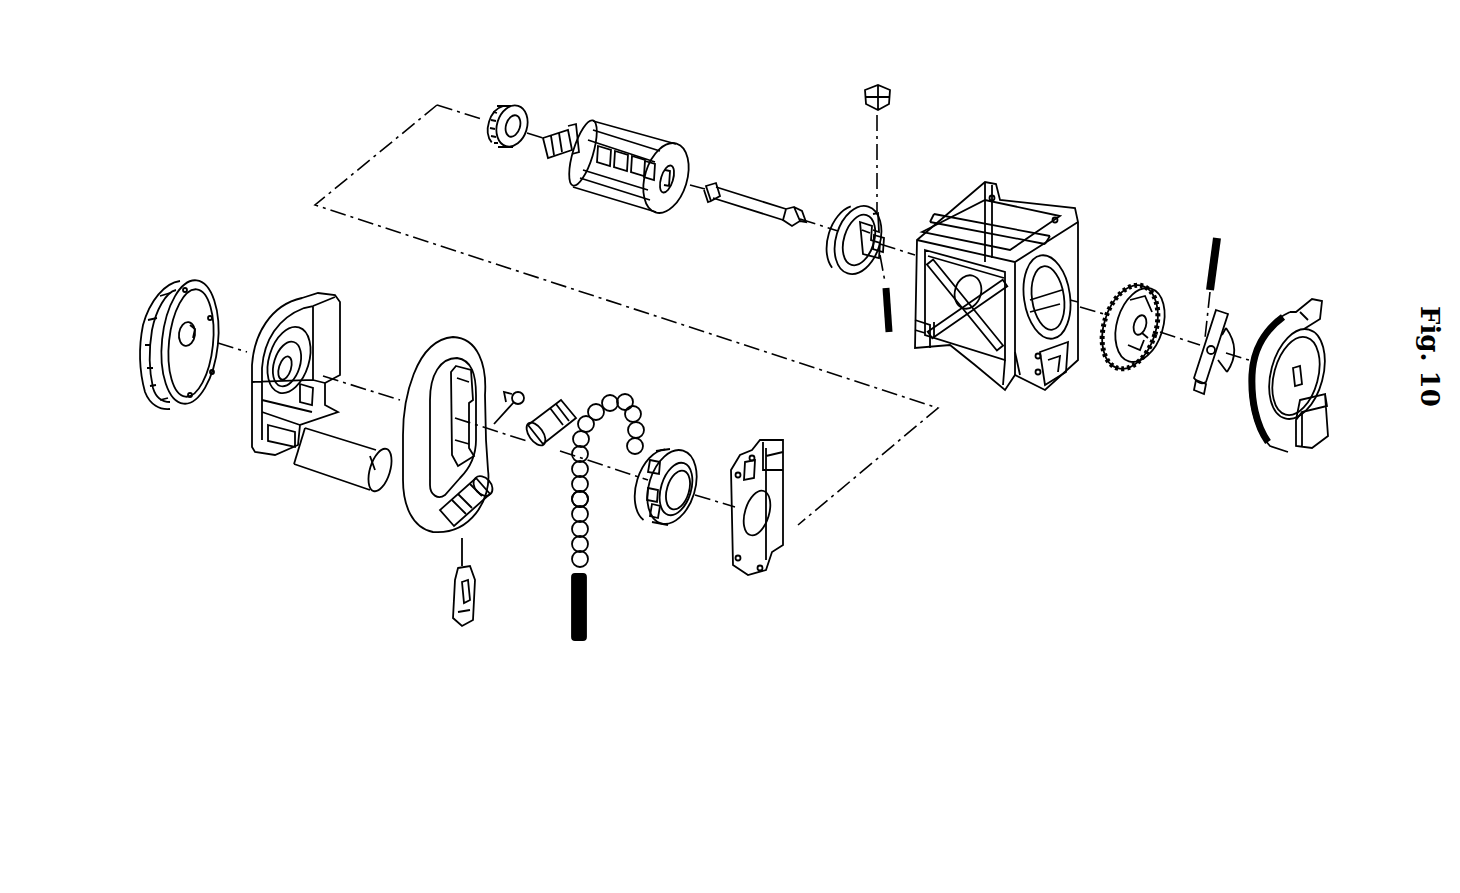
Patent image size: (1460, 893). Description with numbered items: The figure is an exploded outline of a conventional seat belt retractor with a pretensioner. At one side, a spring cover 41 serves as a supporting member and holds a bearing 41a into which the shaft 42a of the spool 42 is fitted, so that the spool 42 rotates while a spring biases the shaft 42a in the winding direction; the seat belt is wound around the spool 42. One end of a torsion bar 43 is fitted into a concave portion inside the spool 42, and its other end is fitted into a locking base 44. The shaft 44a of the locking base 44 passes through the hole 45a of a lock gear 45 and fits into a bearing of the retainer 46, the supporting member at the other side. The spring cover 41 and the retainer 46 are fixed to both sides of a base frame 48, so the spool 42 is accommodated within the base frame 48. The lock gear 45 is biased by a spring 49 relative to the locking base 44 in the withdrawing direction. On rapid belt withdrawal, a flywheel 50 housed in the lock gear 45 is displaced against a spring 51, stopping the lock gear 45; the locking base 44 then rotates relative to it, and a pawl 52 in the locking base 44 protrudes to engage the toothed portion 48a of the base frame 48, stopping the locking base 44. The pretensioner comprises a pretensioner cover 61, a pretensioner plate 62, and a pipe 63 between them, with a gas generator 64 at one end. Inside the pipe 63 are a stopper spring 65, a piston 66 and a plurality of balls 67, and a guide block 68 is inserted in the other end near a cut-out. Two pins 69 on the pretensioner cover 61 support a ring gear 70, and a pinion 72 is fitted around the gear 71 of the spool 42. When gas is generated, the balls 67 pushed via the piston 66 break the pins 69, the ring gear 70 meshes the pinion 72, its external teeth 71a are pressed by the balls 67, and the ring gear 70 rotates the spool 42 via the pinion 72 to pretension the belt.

The spring cover 41 is at (198, 286).
The bearing 41a is at (195, 329).
The spool 42 is at (620, 133).
The shaft 42a is at (562, 131).
The torsion bar 43 is at (755, 196).
The locking base 44 is at (878, 214).
The shaft 44a is at (885, 241).
The lock gear 45 is at (1141, 285).
The hole 45a is at (1146, 340).
The retainer 46 is at (1280, 322).
The base frame 48 is at (1030, 197).
The toothed portion 48a is at (1078, 302).
The spring 49 is at (884, 315).
The flywheel 50 is at (1218, 395).
The spring 51 is at (1216, 240).
The pawl 52 is at (878, 84).
The pretensioner cover 61 is at (330, 295).
The pretensioner plate 62 is at (778, 440).
The pipe 63 is at (465, 350).
The gas generator 64 is at (562, 404).
The stopper spring 65 is at (570, 610).
The piston 66 is at (570, 560).
The balls 67 is at (570, 496).
The guide block 68 is at (472, 596).
The pins 69 is at (272, 390).
The ring gear 70 is at (676, 452).
The gear 71 is at (566, 150).
The external teeth 71a is at (655, 514).
The pinion 72 is at (506, 105).